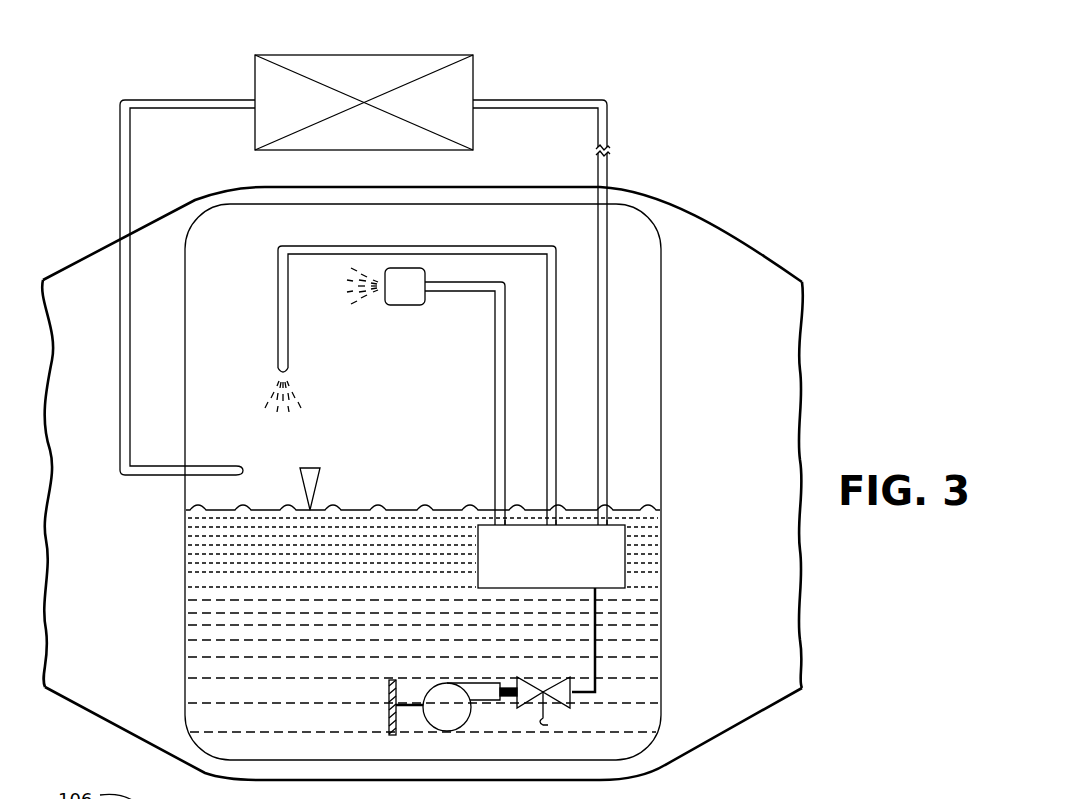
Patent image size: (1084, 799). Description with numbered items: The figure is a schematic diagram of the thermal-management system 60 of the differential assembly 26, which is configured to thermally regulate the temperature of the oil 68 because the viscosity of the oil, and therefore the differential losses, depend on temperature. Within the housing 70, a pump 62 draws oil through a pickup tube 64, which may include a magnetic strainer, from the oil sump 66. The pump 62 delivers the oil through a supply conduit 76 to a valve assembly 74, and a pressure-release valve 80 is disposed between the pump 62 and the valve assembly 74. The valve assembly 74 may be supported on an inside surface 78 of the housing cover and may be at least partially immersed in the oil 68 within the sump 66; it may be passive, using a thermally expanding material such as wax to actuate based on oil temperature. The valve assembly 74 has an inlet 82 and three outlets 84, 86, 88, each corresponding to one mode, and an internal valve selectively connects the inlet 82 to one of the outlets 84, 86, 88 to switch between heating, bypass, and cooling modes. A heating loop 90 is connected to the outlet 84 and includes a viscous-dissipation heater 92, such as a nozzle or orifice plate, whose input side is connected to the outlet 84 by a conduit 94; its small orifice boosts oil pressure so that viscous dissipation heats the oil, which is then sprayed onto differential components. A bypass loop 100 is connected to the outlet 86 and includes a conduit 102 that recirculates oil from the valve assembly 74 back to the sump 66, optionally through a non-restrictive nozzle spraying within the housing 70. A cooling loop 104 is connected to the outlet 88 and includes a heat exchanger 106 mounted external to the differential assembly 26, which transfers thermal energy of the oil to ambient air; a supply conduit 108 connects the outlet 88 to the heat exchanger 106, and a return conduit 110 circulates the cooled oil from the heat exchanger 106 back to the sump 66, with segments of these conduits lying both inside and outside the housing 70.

The differential assembly 26 is at (630, 187).
The thermal-management system 60 is at (683, 187).
The pump 62 is at (455, 683).
The pickup tube 64 is at (412, 703).
The oil sump 66 is at (212, 657).
The oil 68 is at (307, 616).
The housing 70 is at (728, 233).
The valve assembly 74 is at (478, 545).
The supply conduit 76 is at (600, 632).
The inside surface 78 is at (628, 355).
The pressure-release valve 80 is at (558, 698).
The inlet 82 is at (598, 590).
The outlet 84 is at (500, 525).
The outlet 86 is at (552, 525).
The outlet 88 is at (607, 525).
The heating loop 90 is at (445, 305).
The viscous-dissipation heater 92 is at (404, 305).
The conduit 94 is at (474, 291).
The bypass loop 100 is at (258, 241).
The conduit 102 is at (440, 246).
The cooling loop 104 is at (573, 75).
The heat exchanger 106 is at (386, 52).
The supply conduit 108 is at (538, 100).
The return conduit 110 is at (232, 98).